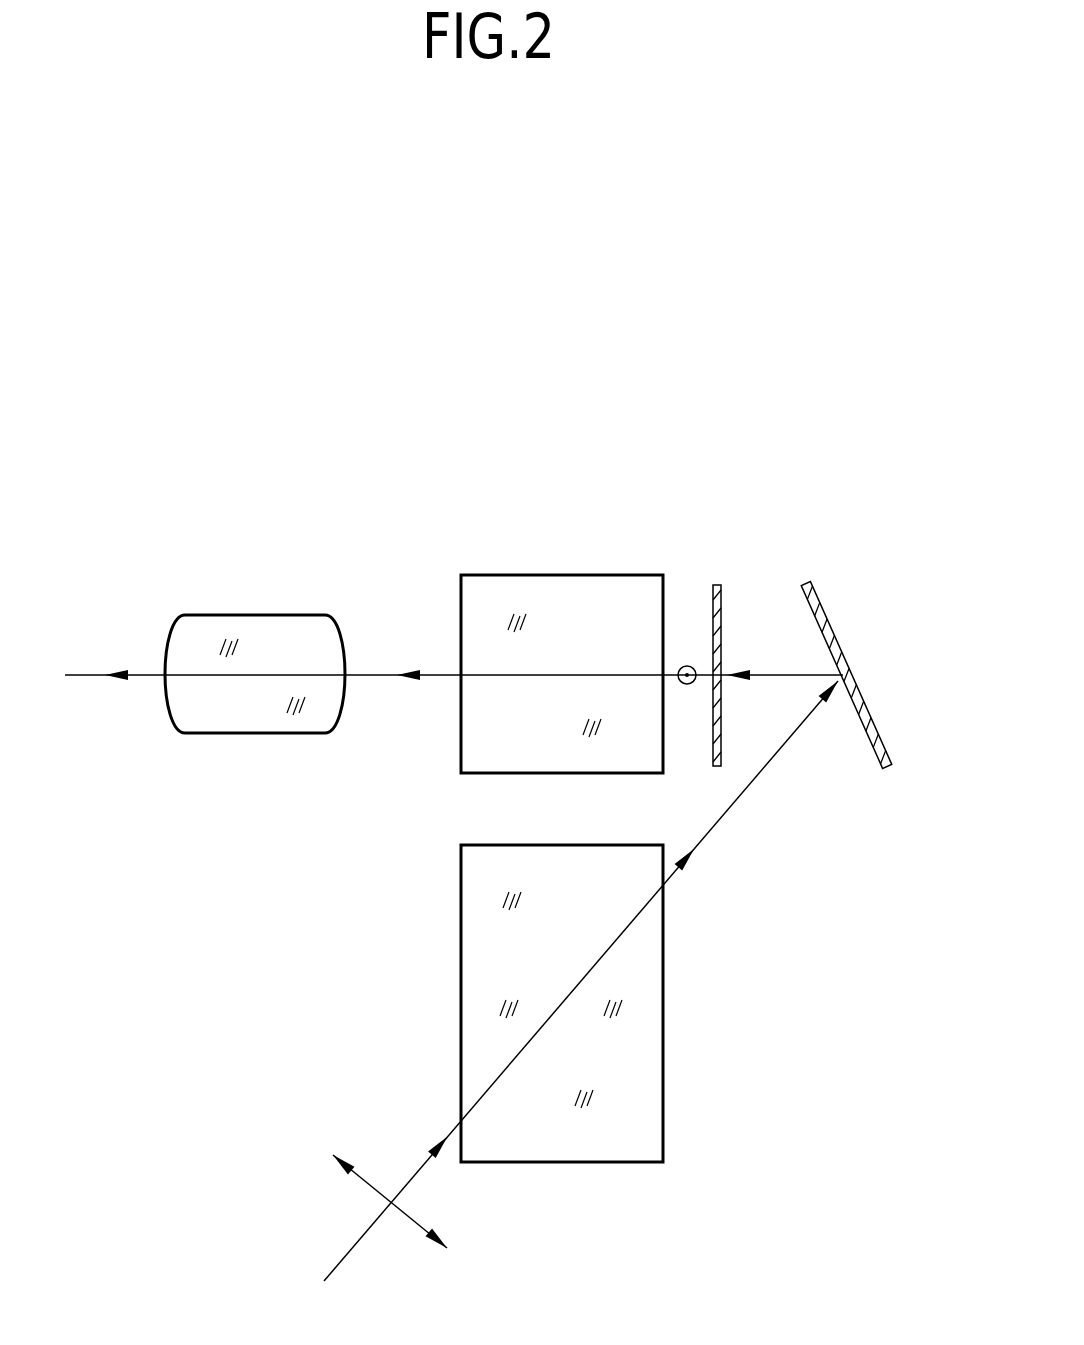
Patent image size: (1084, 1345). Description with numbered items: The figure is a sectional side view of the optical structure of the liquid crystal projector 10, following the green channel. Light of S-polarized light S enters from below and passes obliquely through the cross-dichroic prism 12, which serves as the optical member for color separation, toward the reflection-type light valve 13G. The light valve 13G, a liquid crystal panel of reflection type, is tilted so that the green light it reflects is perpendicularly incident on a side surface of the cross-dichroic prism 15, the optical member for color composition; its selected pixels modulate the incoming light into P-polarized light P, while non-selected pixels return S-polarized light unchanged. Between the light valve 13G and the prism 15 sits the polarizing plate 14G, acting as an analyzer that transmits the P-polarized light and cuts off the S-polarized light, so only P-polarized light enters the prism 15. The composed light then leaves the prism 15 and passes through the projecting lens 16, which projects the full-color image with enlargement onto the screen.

The liquid crystal projector 10 is at (347, 310).
The cross-dichroic prism 12 is at (680, 1050).
The light valve 13G is at (851, 663).
The polarizing plate 14G is at (720, 588).
The cross-dichroic prism 15 is at (567, 558).
The projecting lens 16 is at (255, 615).
The P-polarized light P is at (454, 699).
The S-polarized light S is at (583, 979).